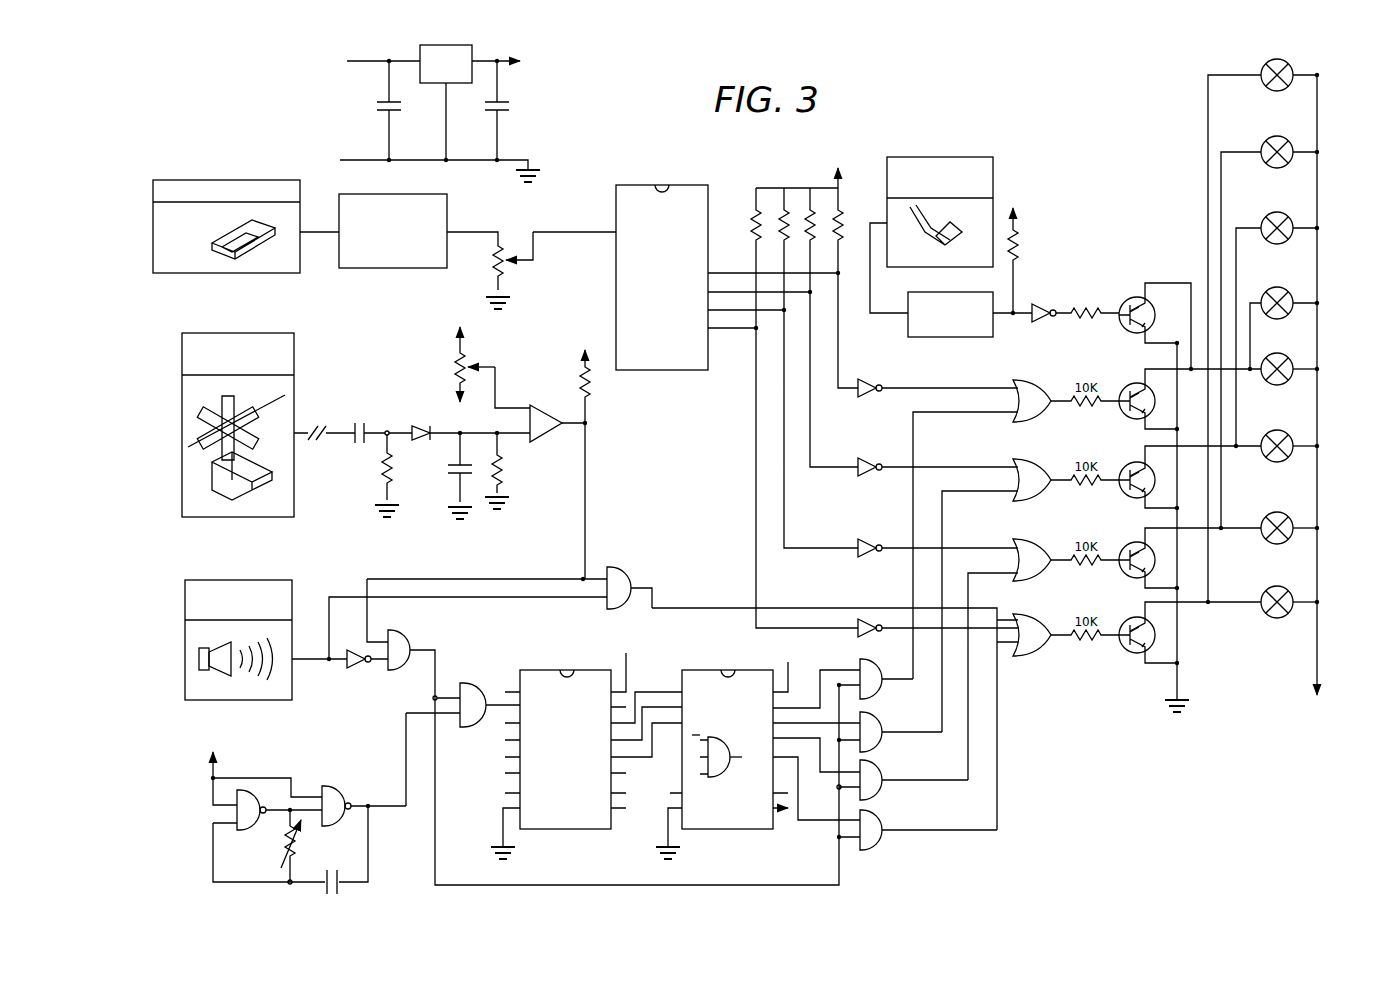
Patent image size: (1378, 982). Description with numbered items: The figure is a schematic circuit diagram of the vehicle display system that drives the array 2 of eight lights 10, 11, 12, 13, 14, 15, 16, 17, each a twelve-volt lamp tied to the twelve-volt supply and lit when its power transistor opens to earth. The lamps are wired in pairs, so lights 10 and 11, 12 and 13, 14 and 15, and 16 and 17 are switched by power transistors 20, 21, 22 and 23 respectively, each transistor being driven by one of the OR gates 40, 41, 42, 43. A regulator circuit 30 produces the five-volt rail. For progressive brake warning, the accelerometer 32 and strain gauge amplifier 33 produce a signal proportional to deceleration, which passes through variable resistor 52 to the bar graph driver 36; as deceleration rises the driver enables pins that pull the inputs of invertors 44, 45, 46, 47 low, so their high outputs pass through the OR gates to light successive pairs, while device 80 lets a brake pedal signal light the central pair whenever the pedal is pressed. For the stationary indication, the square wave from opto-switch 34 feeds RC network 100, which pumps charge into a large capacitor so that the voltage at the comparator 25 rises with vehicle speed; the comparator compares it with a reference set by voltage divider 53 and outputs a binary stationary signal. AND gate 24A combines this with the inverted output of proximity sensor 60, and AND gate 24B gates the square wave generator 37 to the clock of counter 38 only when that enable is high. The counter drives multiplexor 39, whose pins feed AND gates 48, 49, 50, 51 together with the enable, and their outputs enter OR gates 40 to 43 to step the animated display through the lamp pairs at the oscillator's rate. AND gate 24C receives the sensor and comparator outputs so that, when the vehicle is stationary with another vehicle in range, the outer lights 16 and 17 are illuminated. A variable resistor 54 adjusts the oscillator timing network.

The array of lights 2 is at (1216, 58).
The light 10 is at (1300, 292).
The light 11 is at (1300, 362).
The light 12 is at (1300, 216).
The light 13 is at (1300, 438).
The light 14 is at (1300, 142).
The light 15 is at (1300, 520).
The light 16 is at (1300, 60).
The light 17 is at (1300, 598).
The power transistor 20 is at (1131, 376).
The power transistor 21 is at (1131, 456).
The power transistor 22 is at (1127, 537).
The power transistor 23 is at (1134, 613).
The AND gate 24A is at (416, 646).
The AND gate 24B is at (460, 672).
The AND gate 24C is at (698, 545).
The comparator 25 is at (556, 402).
The regulator circuit 30 is at (328, 116).
The accelerometer 32 is at (152, 236).
The strain gauge amplifier 33 is at (455, 208).
The opto-switch 34 is at (173, 433).
The bar graph driver 36 is at (628, 168).
The square wave generator 37 is at (332, 728).
The counter 38 is at (569, 664).
The multiplexor 39 is at (712, 658).
The OR gate 40 is at (1023, 373).
The OR gate 41 is at (1006, 456).
The OR gate 42 is at (1011, 537).
The OR gate 43 is at (1024, 612).
The invertor 44 is at (888, 363).
The invertor 45 is at (868, 455).
The invertor 46 is at (872, 535).
The invertor 47 is at (862, 612).
The AND gate 48 is at (857, 661).
The AND gate 49 is at (878, 713).
The AND gate 50 is at (888, 766).
The AND gate 51 is at (888, 819).
The variable resistor 52 is at (517, 246).
The voltage divider 53 is at (446, 340).
The variable resistor 54 is at (312, 845).
The proximity sensor 60 is at (283, 580).
The brake pedal signal device 80 is at (1008, 174).
The RC network 100 is at (383, 383).